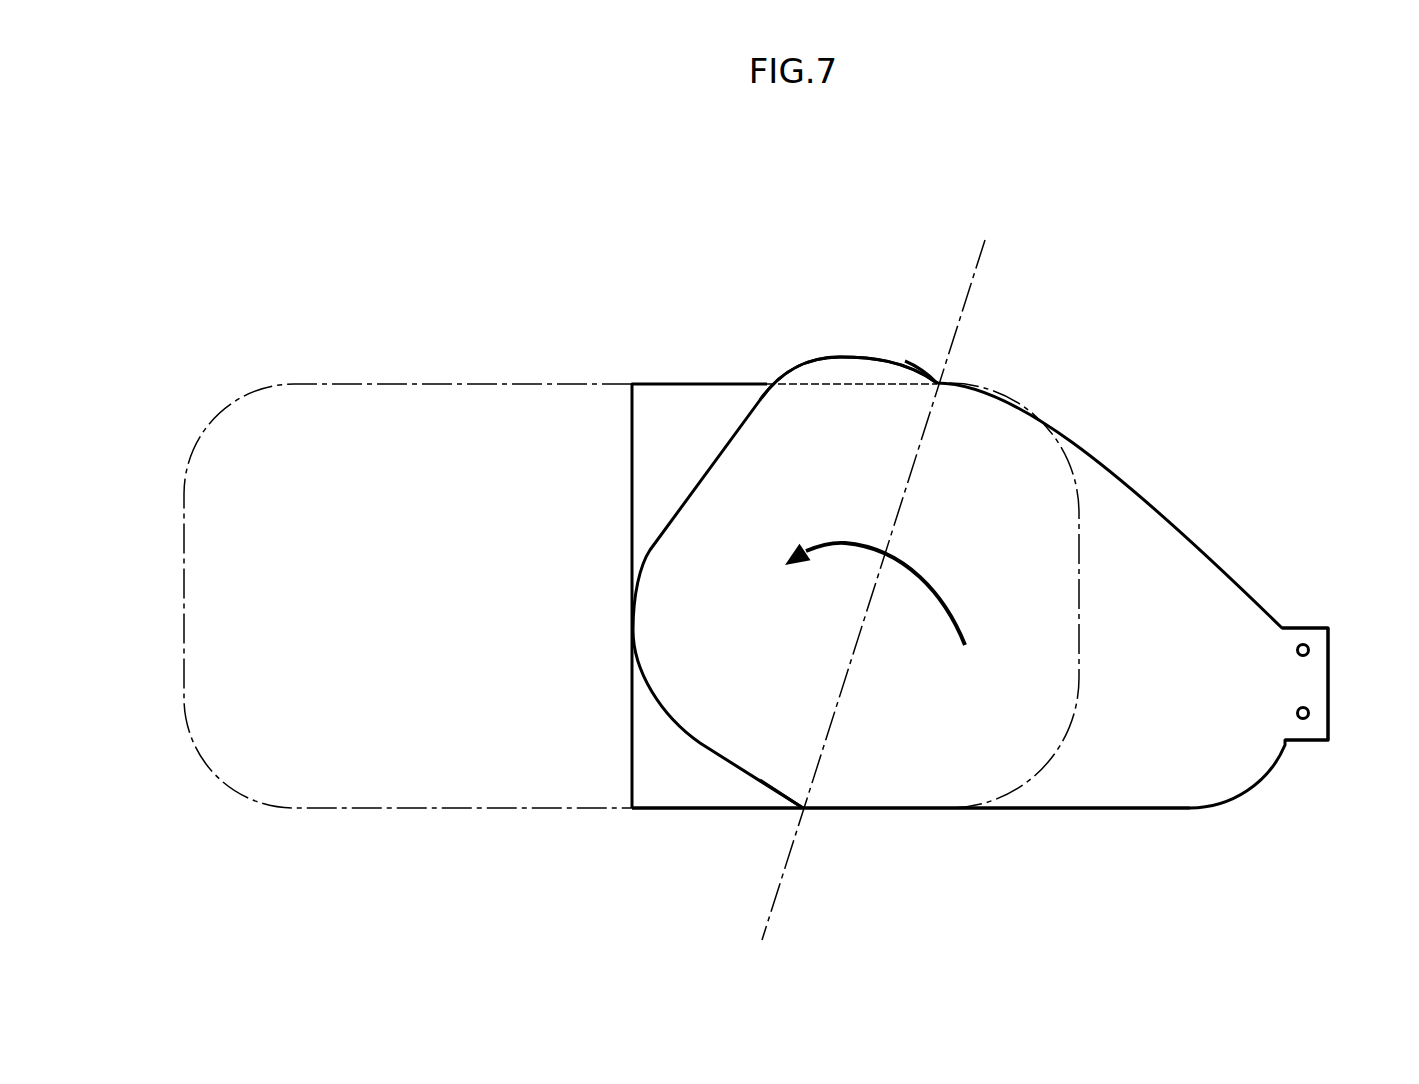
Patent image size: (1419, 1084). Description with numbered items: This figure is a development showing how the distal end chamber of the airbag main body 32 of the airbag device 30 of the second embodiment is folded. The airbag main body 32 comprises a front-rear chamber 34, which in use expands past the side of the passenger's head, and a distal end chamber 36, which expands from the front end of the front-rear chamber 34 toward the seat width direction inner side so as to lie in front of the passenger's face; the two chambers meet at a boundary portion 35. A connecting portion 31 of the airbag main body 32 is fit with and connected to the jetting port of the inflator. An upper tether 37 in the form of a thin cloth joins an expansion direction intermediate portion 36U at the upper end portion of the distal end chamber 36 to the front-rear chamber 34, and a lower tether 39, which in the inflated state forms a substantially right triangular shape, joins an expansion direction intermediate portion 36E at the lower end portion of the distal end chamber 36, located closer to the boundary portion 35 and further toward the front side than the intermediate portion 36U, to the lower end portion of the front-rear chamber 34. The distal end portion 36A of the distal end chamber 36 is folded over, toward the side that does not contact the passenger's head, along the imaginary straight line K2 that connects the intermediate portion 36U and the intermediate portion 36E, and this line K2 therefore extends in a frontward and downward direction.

The airbag device 30 is at (1163, 428).
The connecting portion 31 is at (1313, 627).
The airbag main body 32 is at (653, 383).
The front-rear chamber 34 is at (1093, 590).
The boundary portion 35 is at (630, 535).
The distal end chamber 36 is at (658, 782).
The distal end portion 36A is at (840, 370).
The expansion direction intermediate portion 36E is at (805, 810).
The expansion direction intermediate portion 36U is at (940, 382).
The upper tether 37 is at (740, 384).
The lower tether 39 is at (692, 810).
The imaginary straight line K2 is at (982, 258).